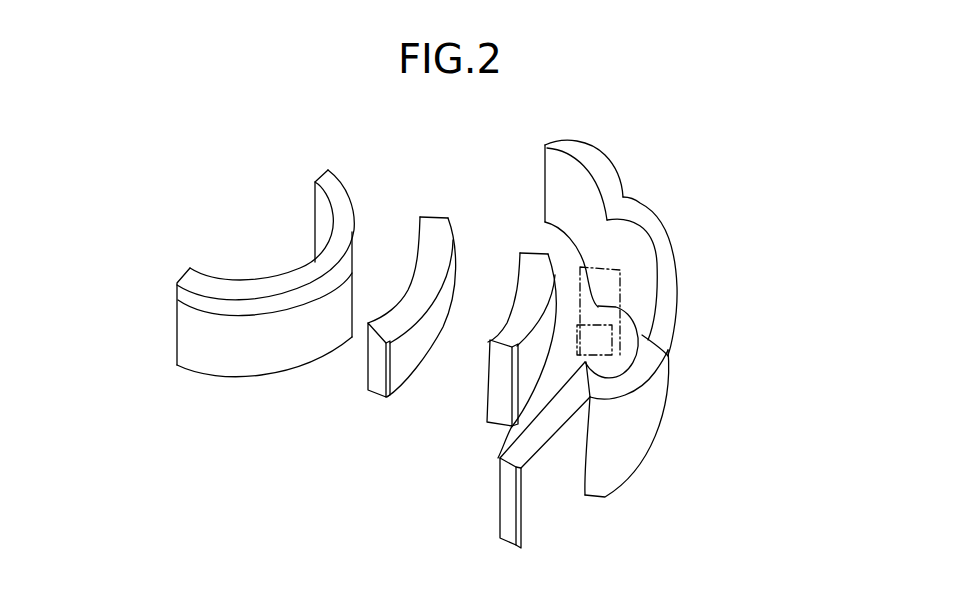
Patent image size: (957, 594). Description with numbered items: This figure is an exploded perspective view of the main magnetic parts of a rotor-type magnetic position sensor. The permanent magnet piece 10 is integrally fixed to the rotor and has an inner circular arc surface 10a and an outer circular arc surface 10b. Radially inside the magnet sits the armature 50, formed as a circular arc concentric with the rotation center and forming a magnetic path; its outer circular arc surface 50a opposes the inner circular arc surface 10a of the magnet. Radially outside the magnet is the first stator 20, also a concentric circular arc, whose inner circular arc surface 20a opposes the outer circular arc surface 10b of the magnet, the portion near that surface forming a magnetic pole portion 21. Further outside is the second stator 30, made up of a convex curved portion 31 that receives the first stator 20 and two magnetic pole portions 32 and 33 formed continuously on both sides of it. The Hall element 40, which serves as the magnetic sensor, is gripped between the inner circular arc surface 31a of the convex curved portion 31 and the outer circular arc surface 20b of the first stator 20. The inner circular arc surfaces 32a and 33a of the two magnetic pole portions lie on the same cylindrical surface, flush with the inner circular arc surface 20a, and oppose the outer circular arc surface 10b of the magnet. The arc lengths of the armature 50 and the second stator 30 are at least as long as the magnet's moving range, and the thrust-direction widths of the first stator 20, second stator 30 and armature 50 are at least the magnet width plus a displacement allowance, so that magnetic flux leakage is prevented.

The permanent magnet piece 10 is at (434, 214).
The inner circular arc surface 10a is at (418, 247).
The outer circular arc surface 10b is at (404, 364).
The first stator 20 is at (538, 251).
The inner circular arc surface 20a is at (517, 273).
The outer circular arc surface 20b is at (522, 369).
The magnetic pole portion 21 is at (527, 296).
The second stator 30 is at (599, 359).
The convex curved portion 31 is at (668, 301).
The inner circular arc surface 31a is at (640, 247).
The magnetic pole portion 32 is at (597, 154).
The inner circular arc surface 32a is at (585, 200).
The magnetic pole portion 33 is at (538, 441).
The inner circular arc surface 33a is at (491, 525).
The Hall element 40 is at (666, 356).
The armature 50 is at (240, 276).
The outer circular arc surface 50a is at (248, 379).